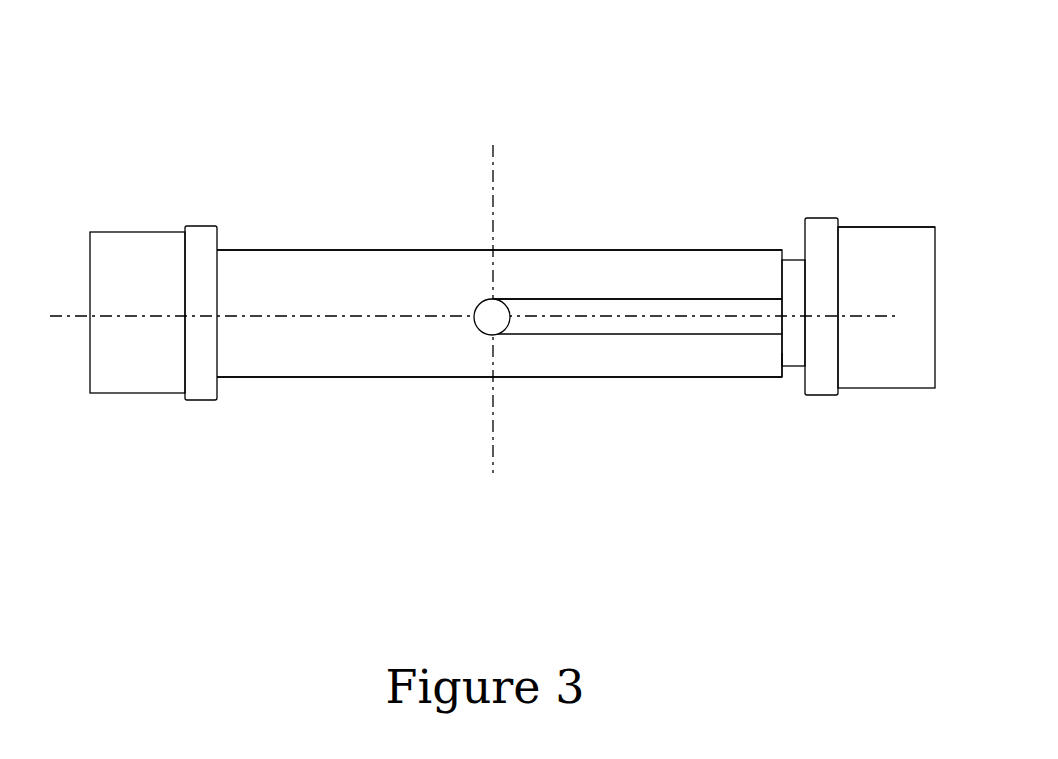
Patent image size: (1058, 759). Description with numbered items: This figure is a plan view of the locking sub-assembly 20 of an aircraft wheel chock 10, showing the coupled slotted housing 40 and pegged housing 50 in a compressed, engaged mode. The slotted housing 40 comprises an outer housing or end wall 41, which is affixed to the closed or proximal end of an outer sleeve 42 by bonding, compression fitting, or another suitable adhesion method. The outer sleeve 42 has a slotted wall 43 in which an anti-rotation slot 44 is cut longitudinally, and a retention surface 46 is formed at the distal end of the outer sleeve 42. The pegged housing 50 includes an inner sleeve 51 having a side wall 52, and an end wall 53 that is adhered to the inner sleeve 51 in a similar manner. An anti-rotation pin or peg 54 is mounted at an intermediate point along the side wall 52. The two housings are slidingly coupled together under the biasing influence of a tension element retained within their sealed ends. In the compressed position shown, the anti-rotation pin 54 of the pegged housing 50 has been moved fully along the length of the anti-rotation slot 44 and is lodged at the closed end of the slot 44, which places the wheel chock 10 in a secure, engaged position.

The wheel chock 10 is at (572, 123).
The locking sub-assembly 20 is at (450, 250).
The slotted housing 40 is at (357, 357).
The outer housing 41 is at (153, 235).
The outer sleeve 42 is at (295, 250).
The slotted wall 43 is at (650, 297).
The anti-rotation slot 44 is at (572, 305).
The retention surface 46 is at (782, 353).
The pegged housing 50 is at (882, 380).
The inner sleeve 51 is at (797, 273).
The side wall 52 is at (793, 258).
The end wall 53 is at (868, 225).
The anti-rotation pin 54 is at (510, 312).